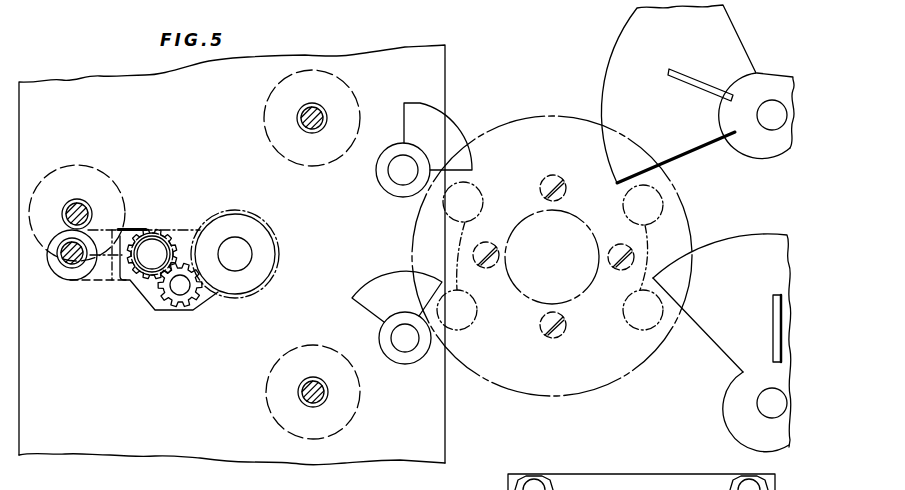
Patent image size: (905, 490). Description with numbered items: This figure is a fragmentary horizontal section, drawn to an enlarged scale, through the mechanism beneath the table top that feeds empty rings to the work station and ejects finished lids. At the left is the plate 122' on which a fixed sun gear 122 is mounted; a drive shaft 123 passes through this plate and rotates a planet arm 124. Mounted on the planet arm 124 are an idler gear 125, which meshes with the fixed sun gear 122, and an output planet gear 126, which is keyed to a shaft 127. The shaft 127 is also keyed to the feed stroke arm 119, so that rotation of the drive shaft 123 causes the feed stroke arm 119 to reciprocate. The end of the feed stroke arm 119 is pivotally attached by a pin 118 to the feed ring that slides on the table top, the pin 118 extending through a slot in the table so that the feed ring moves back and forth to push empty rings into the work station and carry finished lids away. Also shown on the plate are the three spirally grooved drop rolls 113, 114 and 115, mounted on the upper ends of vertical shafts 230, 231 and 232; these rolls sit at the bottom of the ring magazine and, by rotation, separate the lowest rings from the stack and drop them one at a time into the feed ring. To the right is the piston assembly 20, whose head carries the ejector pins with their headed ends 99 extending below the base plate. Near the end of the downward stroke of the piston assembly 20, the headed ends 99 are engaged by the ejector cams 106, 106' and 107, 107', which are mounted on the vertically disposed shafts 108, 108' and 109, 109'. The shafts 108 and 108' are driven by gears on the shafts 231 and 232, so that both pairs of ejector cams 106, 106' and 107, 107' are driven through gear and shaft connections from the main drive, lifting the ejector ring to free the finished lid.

The piston assembly 20 is at (569, 114).
The headed ends 99 is at (553, 256).
The ejector cam 106 is at (397, 286).
The ejector cam 106' is at (454, 128).
The ejector cam 107 is at (722, 326).
The ejector cam 107' is at (678, 94).
The vertical shaft 108 is at (405, 355).
The vertical shaft 108' is at (395, 184).
The vertical shaft 109 is at (738, 413).
The vertical shaft 109' is at (756, 99).
The drop roll 113 is at (66, 165).
The drop roll 114 is at (268, 378).
The drop roll 115 is at (268, 97).
The pin 118 is at (72, 262).
The feed stroke arm 119 is at (108, 270).
The fixed sun gear 122 is at (257, 254).
The plate 122' is at (232, 265).
The drive shaft 123 is at (236, 256).
The planet arm 124 is at (183, 228).
The idler gear 125 is at (203, 309).
The output planet gear 126 is at (156, 232).
The shaft 127 is at (152, 262).
The vertical shaft 230 is at (76, 204).
The vertical shaft 231 is at (318, 412).
The vertical shaft 232 is at (310, 127).